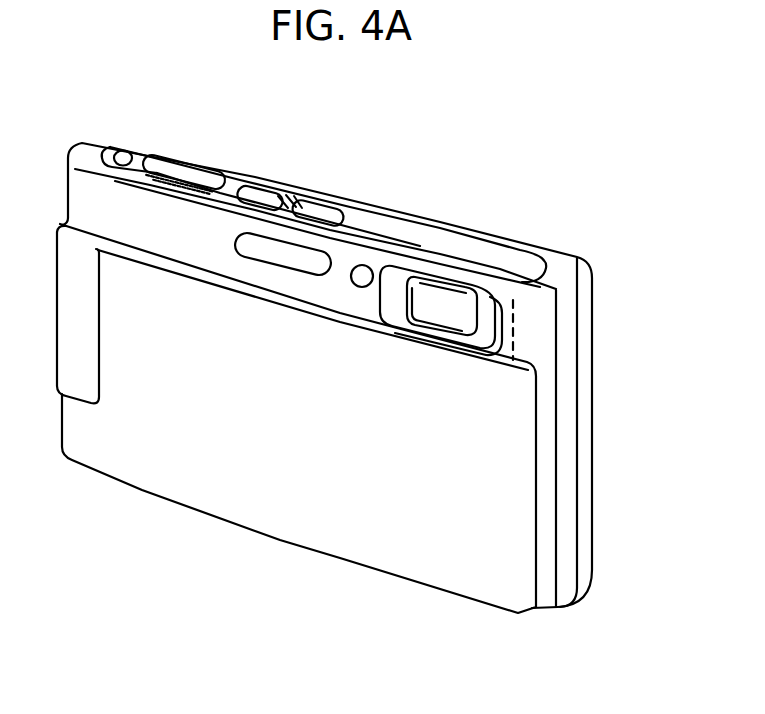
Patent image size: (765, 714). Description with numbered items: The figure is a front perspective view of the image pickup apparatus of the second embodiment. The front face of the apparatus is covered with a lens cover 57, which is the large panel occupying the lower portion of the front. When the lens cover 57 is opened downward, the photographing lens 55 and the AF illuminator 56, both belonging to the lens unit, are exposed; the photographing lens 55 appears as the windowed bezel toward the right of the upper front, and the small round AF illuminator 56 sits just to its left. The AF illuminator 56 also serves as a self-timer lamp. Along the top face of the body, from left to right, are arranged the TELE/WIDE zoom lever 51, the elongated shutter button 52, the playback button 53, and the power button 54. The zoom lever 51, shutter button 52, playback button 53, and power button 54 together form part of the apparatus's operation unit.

The zoom lever 51 is at (108, 150).
The shutter button 52 is at (162, 160).
The playback button 53 is at (266, 194).
The power button 54 is at (328, 214).
The photographing lens 55 is at (465, 316).
The AF illuminator 56 is at (364, 265).
The lens cover 57 is at (503, 487).